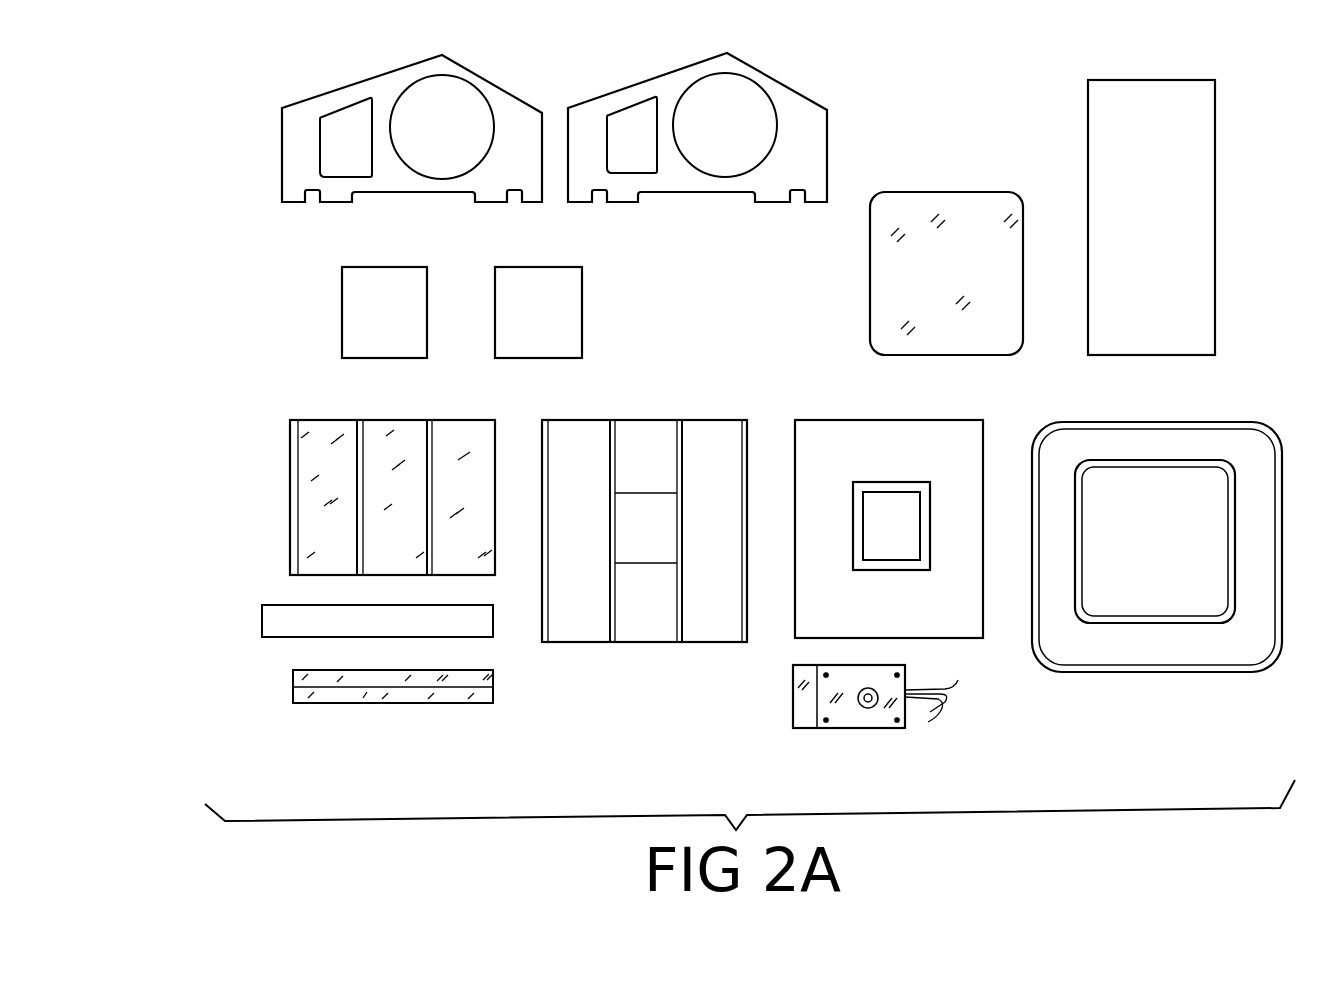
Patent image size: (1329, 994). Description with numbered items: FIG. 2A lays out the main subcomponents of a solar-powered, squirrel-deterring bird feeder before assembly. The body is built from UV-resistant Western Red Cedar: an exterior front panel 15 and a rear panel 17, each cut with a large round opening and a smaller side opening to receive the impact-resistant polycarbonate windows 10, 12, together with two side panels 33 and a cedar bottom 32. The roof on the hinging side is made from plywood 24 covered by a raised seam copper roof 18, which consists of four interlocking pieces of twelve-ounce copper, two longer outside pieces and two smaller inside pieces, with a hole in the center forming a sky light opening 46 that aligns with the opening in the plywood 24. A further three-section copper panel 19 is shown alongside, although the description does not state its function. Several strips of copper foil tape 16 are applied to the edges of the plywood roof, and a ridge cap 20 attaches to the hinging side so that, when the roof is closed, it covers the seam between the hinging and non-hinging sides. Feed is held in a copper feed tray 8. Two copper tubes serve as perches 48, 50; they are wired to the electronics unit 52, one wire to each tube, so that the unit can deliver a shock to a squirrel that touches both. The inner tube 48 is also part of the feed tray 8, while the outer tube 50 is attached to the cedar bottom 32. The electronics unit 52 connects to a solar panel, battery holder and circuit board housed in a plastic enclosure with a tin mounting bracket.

The copper feed tray 8 is at (963, 218).
The polycarbonate window 10 is at (450, 128).
The polycarbonate window 12 is at (747, 105).
The exterior front panel 15 is at (382, 88).
The copper foil tape strips 16 is at (265, 612).
The rear panel 17 is at (655, 137).
The raised seam copper roof 18 is at (593, 613).
The front panel 19 is at (318, 505).
The ridge cap 20 is at (338, 692).
The plywood for hinging side of roof 24 is at (820, 457).
The cedar bottom 32 is at (1162, 247).
The side panels 33 is at (350, 303).
The sky light opening 46 is at (653, 537).
The perch (inner copper tube) 48 is at (1080, 565).
The perch (outer copper tube) 50 is at (1157, 667).
The electronics unit 52 is at (870, 718).